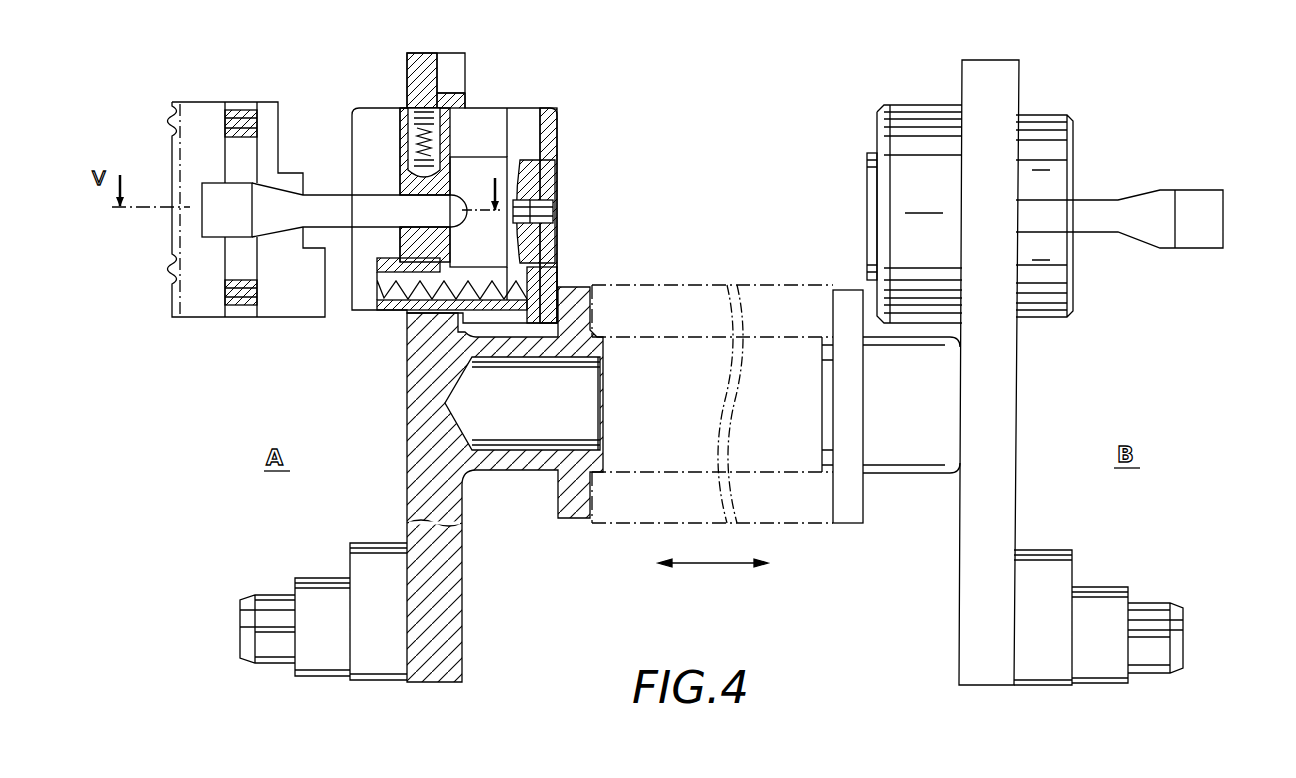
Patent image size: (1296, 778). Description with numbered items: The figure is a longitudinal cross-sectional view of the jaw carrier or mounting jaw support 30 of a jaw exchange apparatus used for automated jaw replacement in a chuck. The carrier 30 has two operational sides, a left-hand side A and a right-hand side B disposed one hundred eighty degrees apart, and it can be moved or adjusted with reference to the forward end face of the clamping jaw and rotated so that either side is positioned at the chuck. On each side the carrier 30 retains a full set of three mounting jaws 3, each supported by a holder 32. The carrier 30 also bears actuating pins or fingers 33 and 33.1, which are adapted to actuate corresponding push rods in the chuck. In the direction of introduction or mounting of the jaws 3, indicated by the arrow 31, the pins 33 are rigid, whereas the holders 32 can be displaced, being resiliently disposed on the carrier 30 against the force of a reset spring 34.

The mounting jaw 3 is at (197, 303).
The carrier 30 is at (683, 273).
The arrow 31 is at (710, 565).
The holder 32 is at (293, 250).
The actuating pin 33 is at (242, 636).
The actuating pin 33.1 is at (1176, 652).
The reset spring 34 is at (383, 305).